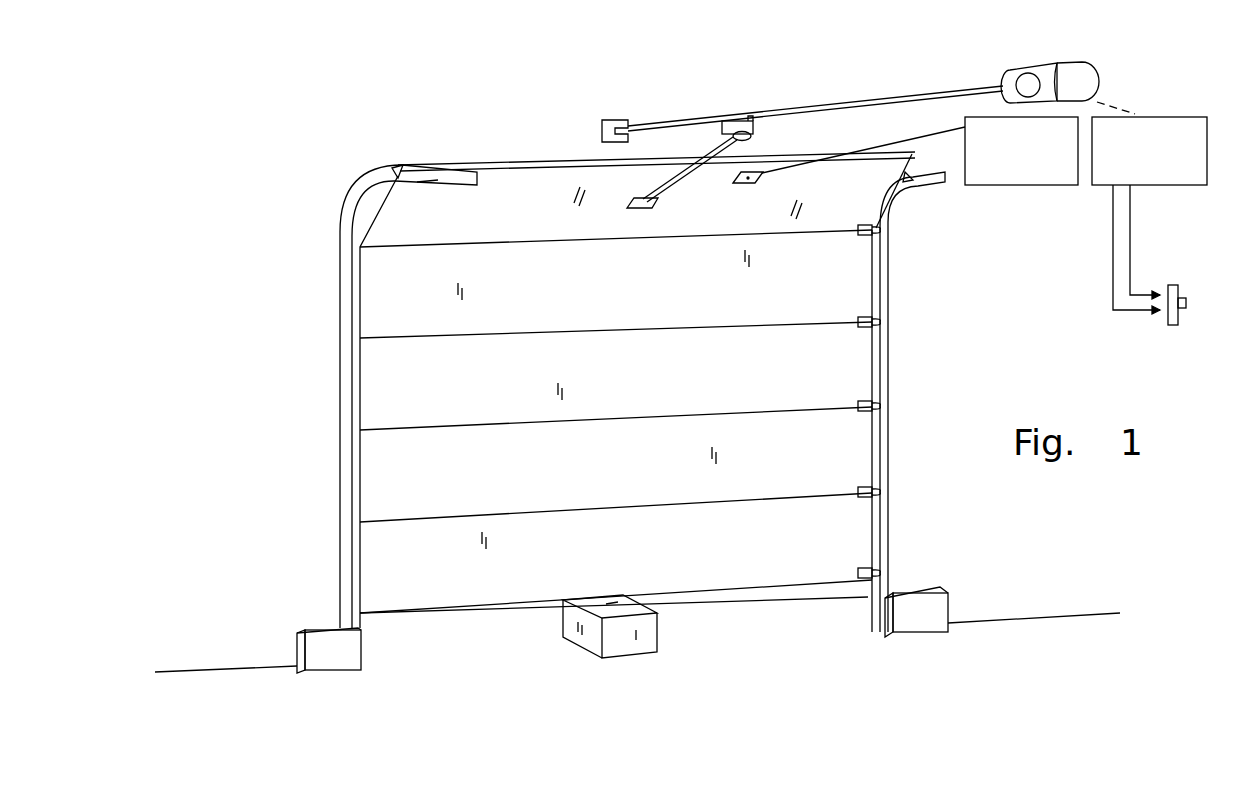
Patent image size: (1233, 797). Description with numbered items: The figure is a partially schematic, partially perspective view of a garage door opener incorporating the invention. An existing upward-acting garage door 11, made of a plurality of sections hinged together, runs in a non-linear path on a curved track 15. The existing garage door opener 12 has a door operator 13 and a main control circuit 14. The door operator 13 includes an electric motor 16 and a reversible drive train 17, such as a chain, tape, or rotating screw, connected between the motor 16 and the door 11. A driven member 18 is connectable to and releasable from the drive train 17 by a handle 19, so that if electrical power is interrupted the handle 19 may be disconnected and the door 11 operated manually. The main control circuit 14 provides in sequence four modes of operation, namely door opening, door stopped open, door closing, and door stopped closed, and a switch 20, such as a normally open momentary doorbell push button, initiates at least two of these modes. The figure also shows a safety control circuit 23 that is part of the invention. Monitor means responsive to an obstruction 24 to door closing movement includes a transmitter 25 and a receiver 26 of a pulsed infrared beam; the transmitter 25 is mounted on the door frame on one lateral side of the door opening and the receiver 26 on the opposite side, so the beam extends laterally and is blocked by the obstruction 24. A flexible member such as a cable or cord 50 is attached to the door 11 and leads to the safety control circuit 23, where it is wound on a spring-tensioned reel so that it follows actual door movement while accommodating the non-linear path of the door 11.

The garage door 11 is at (654, 385).
The garage door opener 12 is at (1081, 71).
The door operator 13 is at (1093, 82).
The main control circuit 14 is at (1175, 117).
The curved track 15 is at (888, 352).
The electric motor 16 is at (1027, 70).
The reversible drive train 17 is at (827, 108).
The driven member 18 is at (728, 121).
The handle 19 is at (760, 139).
The switch 20 is at (1160, 312).
The safety control circuit 23 is at (1007, 185).
The obstruction 24 is at (628, 645).
The transmitter 25 is at (325, 672).
The receiver 26 is at (938, 627).
The cable or cord 50 is at (797, 165).